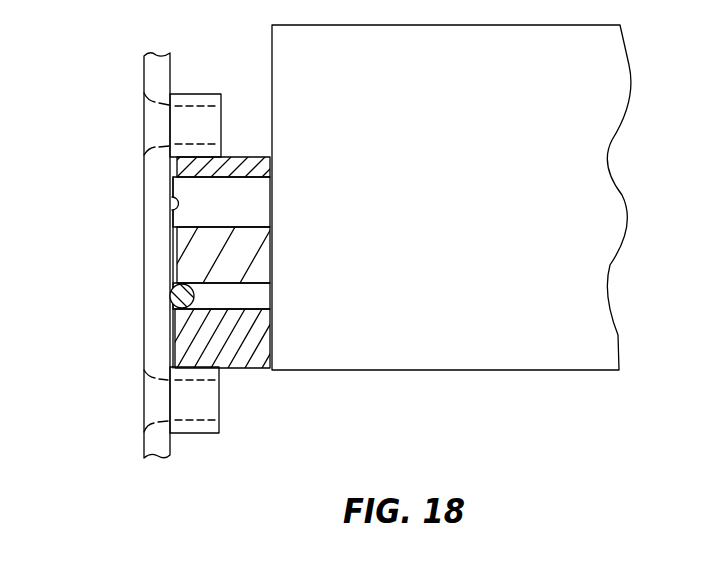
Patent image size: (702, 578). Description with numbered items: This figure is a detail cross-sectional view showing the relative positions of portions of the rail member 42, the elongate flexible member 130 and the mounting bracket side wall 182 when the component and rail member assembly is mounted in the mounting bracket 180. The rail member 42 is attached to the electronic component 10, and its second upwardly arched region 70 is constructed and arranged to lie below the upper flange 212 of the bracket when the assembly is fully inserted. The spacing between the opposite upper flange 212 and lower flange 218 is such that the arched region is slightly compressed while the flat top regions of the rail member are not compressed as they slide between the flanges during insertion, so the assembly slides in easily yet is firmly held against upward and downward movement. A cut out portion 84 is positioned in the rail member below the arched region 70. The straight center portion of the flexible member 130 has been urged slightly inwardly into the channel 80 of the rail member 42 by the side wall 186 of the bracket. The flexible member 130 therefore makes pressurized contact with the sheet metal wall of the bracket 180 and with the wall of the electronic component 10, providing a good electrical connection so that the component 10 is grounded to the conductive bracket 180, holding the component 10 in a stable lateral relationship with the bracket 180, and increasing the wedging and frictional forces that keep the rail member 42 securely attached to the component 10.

The electronic component 10 is at (447, 376).
The rail member 42 is at (172, 250).
The second upwardly arched region 70 is at (272, 167).
The channel 80 is at (258, 298).
The cut out portion 84 is at (258, 203).
The elongate flexible member 130 is at (168, 294).
The mounting bracket 180 is at (176, 239).
The mounting bracket side wall 182 is at (172, 72).
The side wall 186 is at (171, 205).
The upper flange 212 is at (222, 127).
The lower flange 218 is at (220, 399).